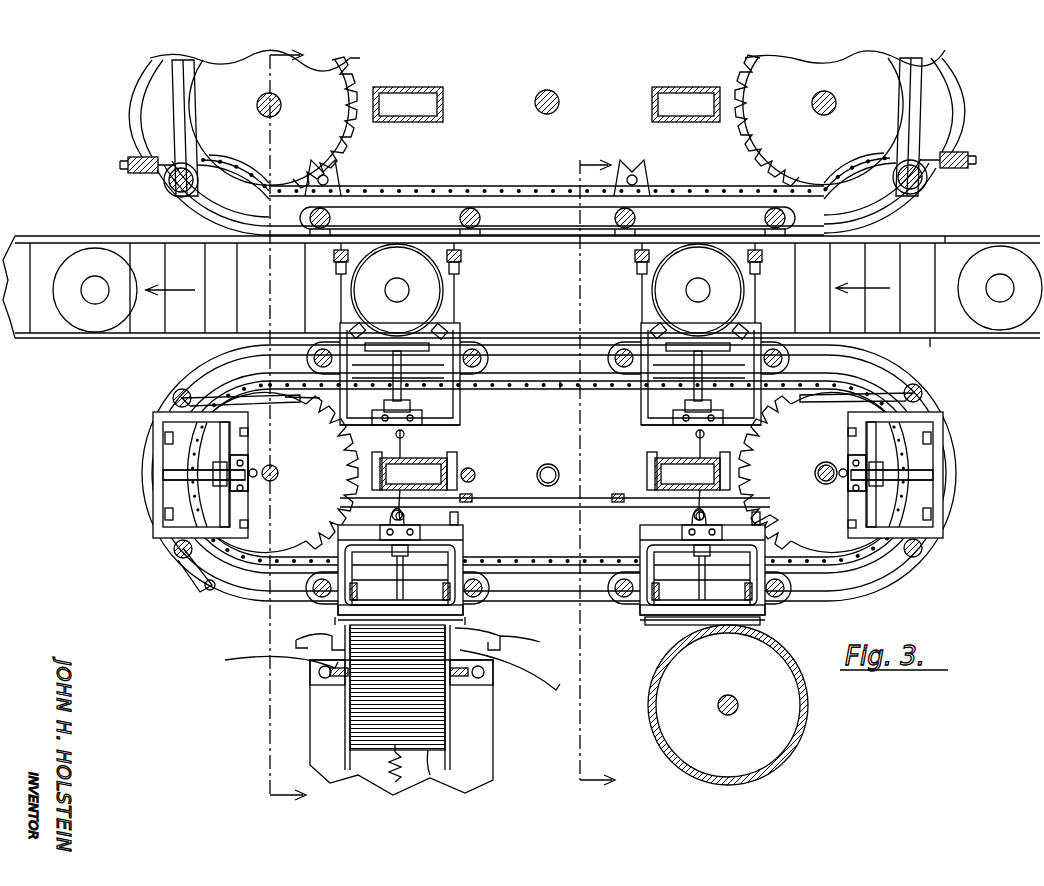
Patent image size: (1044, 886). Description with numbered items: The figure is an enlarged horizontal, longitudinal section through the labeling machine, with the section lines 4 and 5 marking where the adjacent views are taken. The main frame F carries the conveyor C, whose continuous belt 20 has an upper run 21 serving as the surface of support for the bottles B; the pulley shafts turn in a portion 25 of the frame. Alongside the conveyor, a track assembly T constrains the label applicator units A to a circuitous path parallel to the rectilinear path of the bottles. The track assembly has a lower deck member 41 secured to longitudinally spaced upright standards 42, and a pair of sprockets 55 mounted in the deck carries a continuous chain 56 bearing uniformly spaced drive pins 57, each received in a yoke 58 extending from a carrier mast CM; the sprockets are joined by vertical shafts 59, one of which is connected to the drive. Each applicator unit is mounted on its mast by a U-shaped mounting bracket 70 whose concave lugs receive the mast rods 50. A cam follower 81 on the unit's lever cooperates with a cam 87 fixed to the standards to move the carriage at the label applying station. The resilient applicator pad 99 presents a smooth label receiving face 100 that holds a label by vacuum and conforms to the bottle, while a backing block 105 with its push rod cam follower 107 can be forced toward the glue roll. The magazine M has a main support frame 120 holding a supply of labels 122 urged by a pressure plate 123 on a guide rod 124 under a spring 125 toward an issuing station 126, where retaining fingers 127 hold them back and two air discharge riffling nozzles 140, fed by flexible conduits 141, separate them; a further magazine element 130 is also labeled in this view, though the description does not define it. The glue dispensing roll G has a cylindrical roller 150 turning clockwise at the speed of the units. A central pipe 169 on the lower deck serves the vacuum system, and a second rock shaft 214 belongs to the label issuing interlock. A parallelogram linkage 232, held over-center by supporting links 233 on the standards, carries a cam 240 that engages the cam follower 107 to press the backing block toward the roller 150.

The section line 4- 4 is at (279, 433).
The section line 5- 5 is at (596, 476).
The continuous belt 20 is at (918, 330).
The upper run 21 is at (232, 300).
The frame portion 25 is at (38, 236).
The lower deck member 41 is at (200, 368).
The upright standards 42 is at (758, 470).
The mast rods 50 is at (318, 352).
The sprockets 55 is at (340, 497).
The continuous chain 56 is at (531, 383).
The drive pins 57 is at (628, 175).
The yoke 58 is at (655, 186).
The vertical shafts 59 is at (274, 470).
The U-shaped mounting bracket 70 is at (460, 412).
The cam follower 81 is at (322, 405).
The cam 87 is at (565, 388).
The resilient applicator pad 99 is at (420, 332).
The label receiving face 100 is at (672, 625).
The backing block 105 is at (390, 292).
The cam follower 107 is at (550, 475).
The main support frame 120 is at (332, 716).
The label 122 is at (445, 720).
The pressure plate 123 is at (430, 752).
The guide rod 124 is at (398, 782).
The spring 125 is at (392, 768).
The issuing station 126 is at (305, 622).
The retaining fingers 127 is at (470, 630).
The magazine 130 is at (318, 742).
The air discharge riffling nozzles 140 is at (530, 652).
The flexible air supply conduit 141 is at (550, 690).
The cylindrical roller 150 is at (808, 712).
The central pipe 169 is at (548, 464).
The second rock shaft 214 is at (476, 474).
The parallelogram linkage 232 is at (545, 500).
The supporting links 233 is at (548, 483).
The cam 240 is at (665, 528).
The label applicator units A is at (338, 310).
The bottles B is at (67, 255).
The conveyor C is at (951, 233).
The carrier masts CM is at (172, 568).
The main frame F is at (455, 440).
The glue dispensing roll G is at (802, 756).
The magazine M is at (466, 741).
The track assemblies T is at (962, 472).